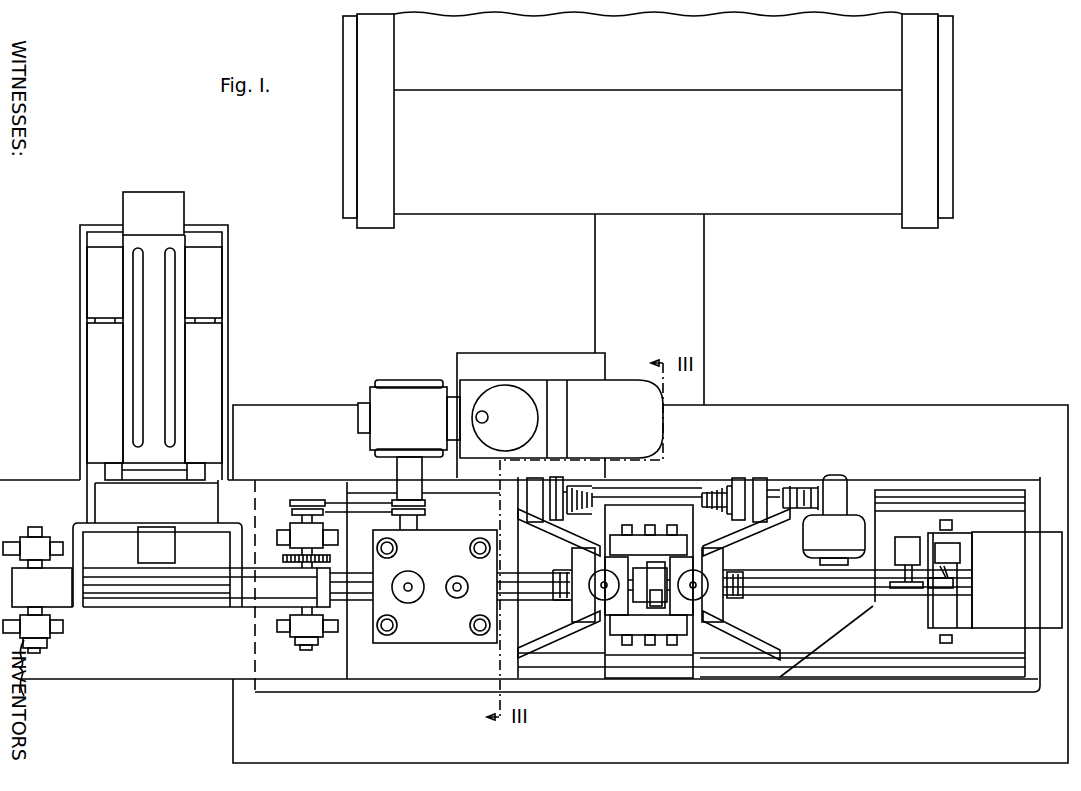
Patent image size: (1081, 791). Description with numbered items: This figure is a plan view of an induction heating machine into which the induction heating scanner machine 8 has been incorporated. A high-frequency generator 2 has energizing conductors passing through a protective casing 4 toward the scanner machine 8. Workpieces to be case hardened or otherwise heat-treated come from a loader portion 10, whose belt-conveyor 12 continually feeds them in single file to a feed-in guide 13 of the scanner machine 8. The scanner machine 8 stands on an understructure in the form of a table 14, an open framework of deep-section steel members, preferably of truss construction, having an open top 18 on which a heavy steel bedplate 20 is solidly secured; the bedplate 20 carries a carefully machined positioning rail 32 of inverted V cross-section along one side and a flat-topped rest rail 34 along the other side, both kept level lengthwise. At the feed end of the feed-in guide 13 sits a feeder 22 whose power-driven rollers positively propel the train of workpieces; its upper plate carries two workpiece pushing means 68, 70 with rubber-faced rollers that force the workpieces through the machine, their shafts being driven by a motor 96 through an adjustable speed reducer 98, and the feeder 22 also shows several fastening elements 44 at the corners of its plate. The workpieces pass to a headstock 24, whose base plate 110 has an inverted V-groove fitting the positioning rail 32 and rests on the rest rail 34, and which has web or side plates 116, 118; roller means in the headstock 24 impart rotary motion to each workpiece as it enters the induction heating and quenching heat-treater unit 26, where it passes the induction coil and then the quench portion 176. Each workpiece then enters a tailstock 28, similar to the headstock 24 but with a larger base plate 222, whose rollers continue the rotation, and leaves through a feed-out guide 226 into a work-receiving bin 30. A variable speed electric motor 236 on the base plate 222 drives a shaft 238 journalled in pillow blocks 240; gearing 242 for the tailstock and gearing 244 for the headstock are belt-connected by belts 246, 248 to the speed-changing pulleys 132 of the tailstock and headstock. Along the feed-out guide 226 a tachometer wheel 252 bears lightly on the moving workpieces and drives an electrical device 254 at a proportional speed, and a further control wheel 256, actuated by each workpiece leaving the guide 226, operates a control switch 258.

The high-frequency generator 2 is at (649, 161).
The protective casing 4 is at (697, 289).
The scanner machine 8 is at (352, 388).
The loader portion 10 is at (70, 378).
The belt-conveyor 12 is at (248, 607).
The feed-in guide 13 is at (369, 595).
The table 14 is at (853, 398).
The open top 18 is at (920, 411).
The bedplate 20 is at (652, 685).
The feeder 22 is at (441, 553).
The headstock 24 is at (544, 564).
The induction heating and quenching heat-treater unit 26 is at (655, 575).
The tailstock 28 is at (801, 634).
The work-receiving means 30 is at (1017, 580).
The positioning rail 32 is at (963, 497).
The rest rail 34 is at (928, 662).
The mounting bolts 44 is at (392, 556).
The workpiece pushing means 68 is at (416, 598).
The workpiece pushing means 70 is at (466, 590).
The motor 96 is at (612, 393).
The adjustable speed reducer 98 is at (416, 394).
The base plate 110 is at (452, 672).
The web plate 116 is at (556, 646).
The web plate 118 is at (518, 521).
The speed-changing pulleys 132 is at (568, 603).
The quench portion 176 is at (655, 600).
The base plate 222 is at (838, 636).
The feed-out guide 226 is at (825, 606).
The variable speed electric motor 236 is at (803, 539).
The shaft 238 is at (658, 497).
The pillow blocks 240 is at (535, 480).
The gearing 242 is at (721, 487).
The gearing 244 is at (575, 490).
The belt 246 is at (745, 558).
The belt 248 is at (566, 522).
The tachometer wheel 252 is at (912, 590).
The electrical device 254 is at (915, 540).
The control wheel 256 is at (958, 589).
The control switch 258 is at (955, 545).